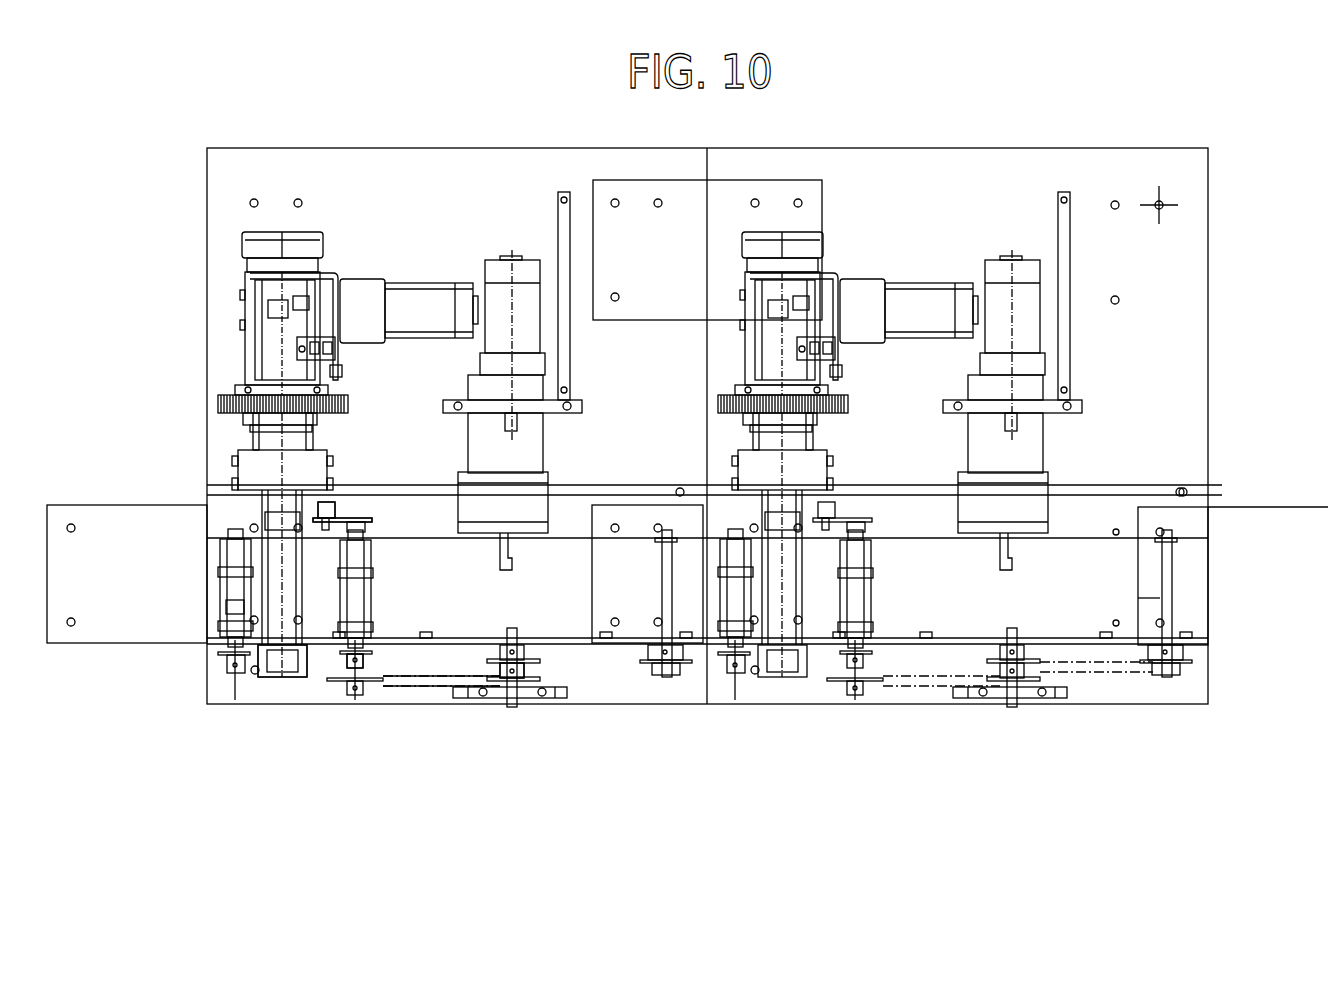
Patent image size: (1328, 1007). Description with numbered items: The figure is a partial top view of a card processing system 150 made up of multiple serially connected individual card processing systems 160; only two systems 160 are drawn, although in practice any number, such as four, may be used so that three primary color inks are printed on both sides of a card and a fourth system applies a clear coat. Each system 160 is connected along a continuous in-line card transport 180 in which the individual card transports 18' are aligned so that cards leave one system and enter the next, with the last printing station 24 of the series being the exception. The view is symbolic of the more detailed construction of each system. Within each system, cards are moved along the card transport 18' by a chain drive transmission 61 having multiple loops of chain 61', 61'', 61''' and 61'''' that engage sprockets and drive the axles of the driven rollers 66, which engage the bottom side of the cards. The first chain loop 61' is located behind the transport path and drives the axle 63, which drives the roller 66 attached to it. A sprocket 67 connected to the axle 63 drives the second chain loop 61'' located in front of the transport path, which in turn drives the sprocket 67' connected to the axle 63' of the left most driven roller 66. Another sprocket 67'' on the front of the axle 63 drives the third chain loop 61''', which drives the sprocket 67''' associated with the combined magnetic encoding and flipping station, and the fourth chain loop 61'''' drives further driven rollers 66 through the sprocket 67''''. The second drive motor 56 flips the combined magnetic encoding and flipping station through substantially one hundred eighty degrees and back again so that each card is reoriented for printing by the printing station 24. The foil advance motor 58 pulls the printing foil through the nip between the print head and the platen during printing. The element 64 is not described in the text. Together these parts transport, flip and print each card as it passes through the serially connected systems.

The card processing system 150 is at (487, 133).
The individual card processing system 160 is at (505, 212).
The continuous in-line card transport 180 is at (500, 614).
The foil advance motor 58 is at (428, 282).
The second drive motor 56 is at (493, 260).
The printing station 24 is at (201, 566).
The driven roller 66 is at (217, 600).
The axle 63 is at (605, 589).
The axle 63' is at (193, 617).
The plate 64 is at (368, 518).
The chain drive transmission 61 is at (441, 755).
The first chain loop 61' is at (364, 484).
The second chain loop 61'' is at (265, 720).
The third chain loop 61''' is at (756, 739).
The fourth chain loop 61'''' is at (1099, 709).
The sprocket 67 is at (345, 733).
The sprocket 67' is at (448, 698).
The sprocket 67'' is at (586, 710).
The sprocket 67''' is at (786, 729).
The sprocket 67'''' is at (791, 642).
The card transport 18' is at (643, 738).